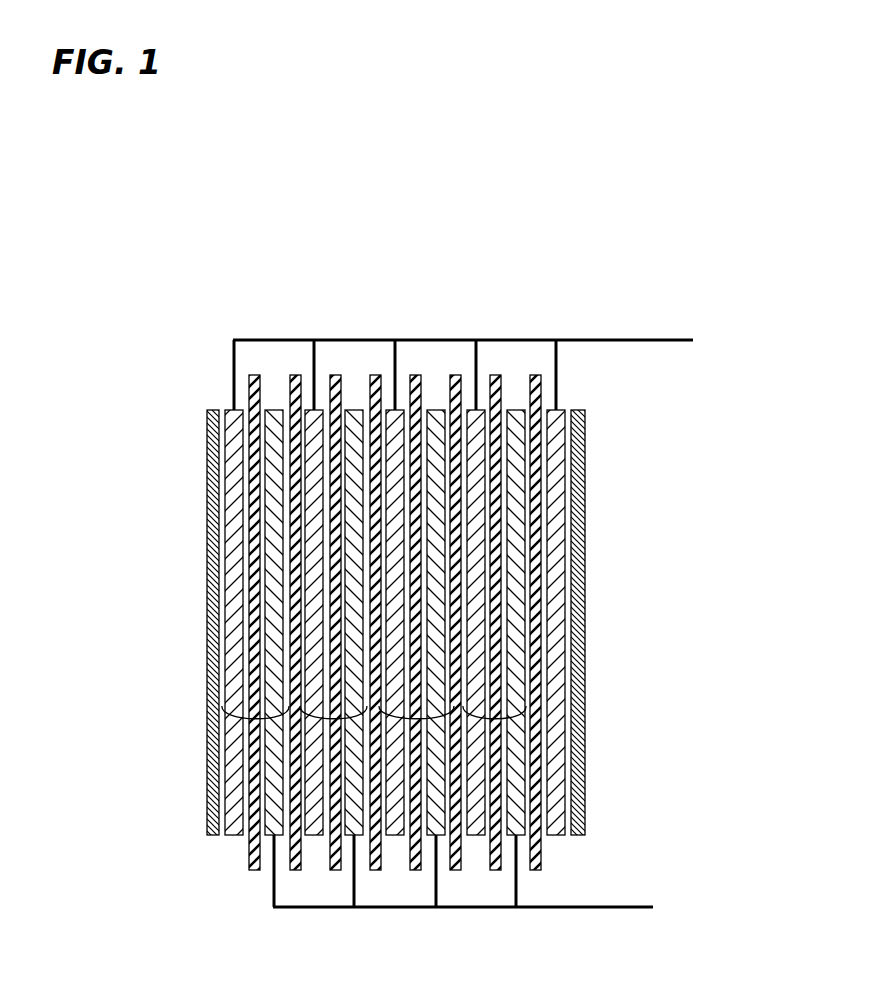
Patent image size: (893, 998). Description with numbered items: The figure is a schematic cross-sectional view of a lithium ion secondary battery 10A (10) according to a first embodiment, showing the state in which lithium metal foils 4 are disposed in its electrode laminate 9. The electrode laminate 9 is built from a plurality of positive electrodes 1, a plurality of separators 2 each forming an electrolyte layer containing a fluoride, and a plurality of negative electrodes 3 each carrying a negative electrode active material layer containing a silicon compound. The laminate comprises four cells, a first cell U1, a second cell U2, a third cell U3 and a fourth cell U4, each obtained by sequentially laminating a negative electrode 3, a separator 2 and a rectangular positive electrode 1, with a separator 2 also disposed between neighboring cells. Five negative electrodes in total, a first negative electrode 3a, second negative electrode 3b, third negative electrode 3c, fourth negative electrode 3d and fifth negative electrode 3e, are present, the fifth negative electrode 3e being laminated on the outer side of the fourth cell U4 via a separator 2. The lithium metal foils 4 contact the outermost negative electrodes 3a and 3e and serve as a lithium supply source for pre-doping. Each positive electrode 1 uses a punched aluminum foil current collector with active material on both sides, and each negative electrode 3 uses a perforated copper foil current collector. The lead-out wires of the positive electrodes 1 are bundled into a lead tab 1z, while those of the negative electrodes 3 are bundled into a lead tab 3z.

The lithium ion secondary battery 10A is at (762, 148).
The lithium ion secondary battery 10 is at (427, 556).
The electrode laminate 9 is at (690, 474).
The lead tab 3z is at (653, 343).
The lead tab 1z is at (655, 906).
The negative electrode 3 is at (391, 529).
The first negative electrode 3a is at (229, 409).
The second negative electrode 3b is at (308, 408).
The third negative electrode 3c is at (390, 408).
The fourth negative electrode 3d is at (471, 408).
The fifth negative electrode 3e is at (553, 408).
The positive electrode 1 is at (272, 836).
The separator 2 is at (257, 373).
The lithium metal foil 4 is at (207, 558).
The first cell U1 is at (222, 730).
The second cell U2 is at (300, 722).
The third cell U3 is at (428, 726).
The fourth cell U4 is at (530, 728).